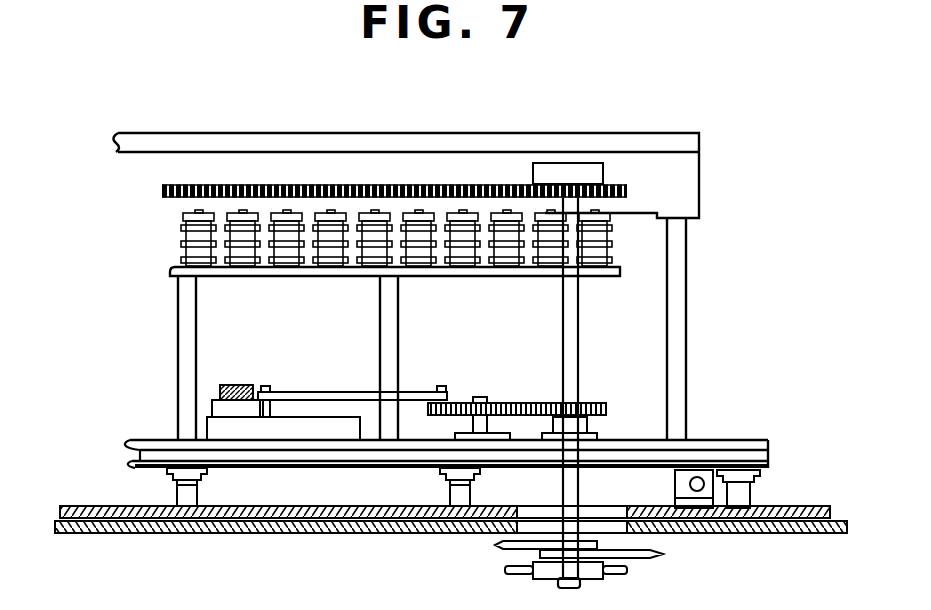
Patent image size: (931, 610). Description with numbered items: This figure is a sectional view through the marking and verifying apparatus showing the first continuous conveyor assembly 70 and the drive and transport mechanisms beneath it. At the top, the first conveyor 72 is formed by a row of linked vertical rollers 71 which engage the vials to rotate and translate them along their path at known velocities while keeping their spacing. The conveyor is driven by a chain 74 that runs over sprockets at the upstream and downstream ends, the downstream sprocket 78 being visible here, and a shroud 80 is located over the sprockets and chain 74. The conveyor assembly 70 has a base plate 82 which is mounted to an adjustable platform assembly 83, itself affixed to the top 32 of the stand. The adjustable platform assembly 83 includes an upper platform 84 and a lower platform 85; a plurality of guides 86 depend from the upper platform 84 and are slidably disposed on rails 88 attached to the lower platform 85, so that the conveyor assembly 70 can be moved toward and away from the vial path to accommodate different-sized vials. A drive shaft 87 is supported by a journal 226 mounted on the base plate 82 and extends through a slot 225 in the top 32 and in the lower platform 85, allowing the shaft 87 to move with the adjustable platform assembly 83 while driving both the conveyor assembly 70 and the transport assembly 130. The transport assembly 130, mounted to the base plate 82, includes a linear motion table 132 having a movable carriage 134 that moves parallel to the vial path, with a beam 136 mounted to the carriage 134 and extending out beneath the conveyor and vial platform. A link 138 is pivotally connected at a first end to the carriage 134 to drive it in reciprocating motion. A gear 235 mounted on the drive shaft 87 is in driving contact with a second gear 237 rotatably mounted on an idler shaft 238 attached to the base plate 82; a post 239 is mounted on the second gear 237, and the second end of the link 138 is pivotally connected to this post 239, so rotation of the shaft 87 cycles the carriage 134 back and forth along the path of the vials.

The top support surface 32 is at (730, 534).
The first continuous conveyor assembly 70 is at (350, 134).
The linked vertical rollers 71 is at (608, 243).
The first conveyor 72 is at (420, 184).
The chain 74 is at (275, 184).
The sprocket 78 is at (600, 183).
The shroud 80 is at (520, 133).
The base plate 82 is at (703, 446).
The adjustable platform assembly 83 is at (770, 463).
The upper platform 84 is at (130, 450).
The lower platform 85 is at (62, 507).
The guides 86 is at (172, 472).
The drive shaft 87 is at (578, 302).
The rails 88 is at (188, 492).
The transport assembly 130 is at (238, 385).
The linear motion table 132 is at (277, 428).
The movable carriage 134 is at (215, 405).
The beam 136 is at (222, 387).
The link 138 is at (333, 392).
The slot 225 is at (596, 518).
The journal 226 is at (597, 432).
The gear 235 is at (585, 416).
The second gear 237 is at (465, 403).
The idler shaft 238 is at (487, 404).
The post 239 is at (441, 386).